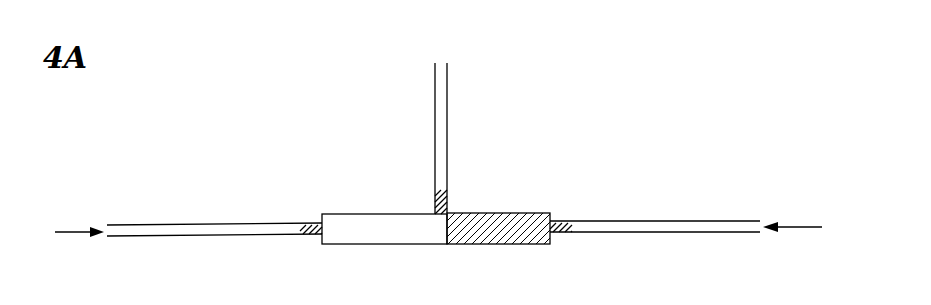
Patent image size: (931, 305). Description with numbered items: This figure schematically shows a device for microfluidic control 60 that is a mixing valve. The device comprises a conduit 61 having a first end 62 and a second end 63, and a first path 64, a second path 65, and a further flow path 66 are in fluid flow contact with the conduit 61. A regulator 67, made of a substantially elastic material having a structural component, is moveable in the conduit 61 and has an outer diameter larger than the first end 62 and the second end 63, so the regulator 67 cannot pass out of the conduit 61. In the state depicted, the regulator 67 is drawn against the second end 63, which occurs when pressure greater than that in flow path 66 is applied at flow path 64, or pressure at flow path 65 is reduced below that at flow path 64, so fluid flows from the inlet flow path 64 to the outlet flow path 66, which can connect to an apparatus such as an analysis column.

The device for microfluidic control 60 is at (264, 116).
The conduit 61 is at (377, 228).
The first end 62 is at (307, 222).
The second end 63 is at (559, 223).
The first path 64 is at (62, 232).
The second path 65 is at (806, 225).
The flow path 66 is at (441, 88).
The regulator 67 is at (466, 222).